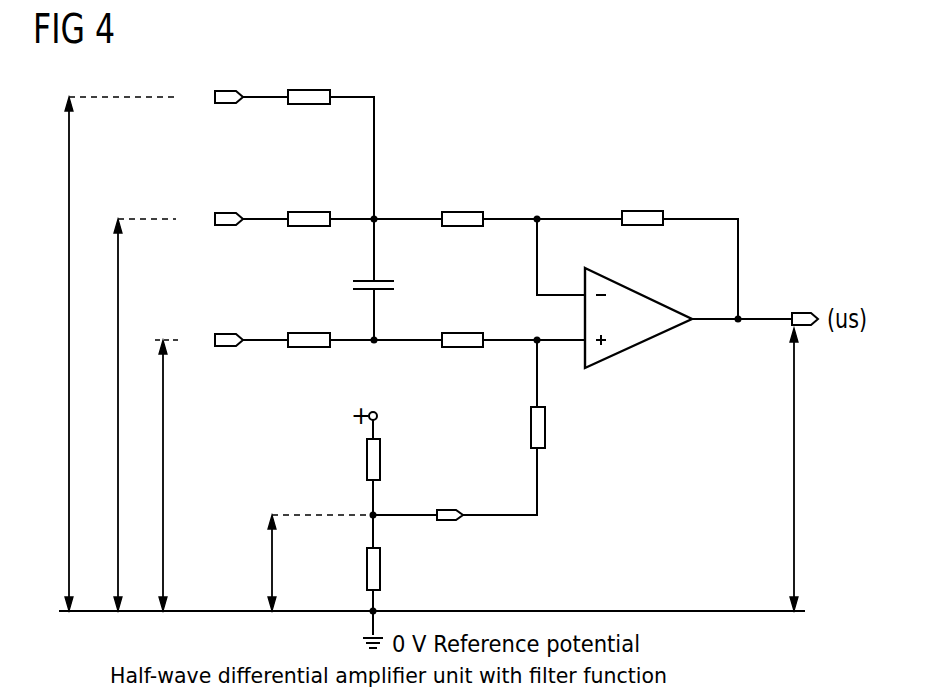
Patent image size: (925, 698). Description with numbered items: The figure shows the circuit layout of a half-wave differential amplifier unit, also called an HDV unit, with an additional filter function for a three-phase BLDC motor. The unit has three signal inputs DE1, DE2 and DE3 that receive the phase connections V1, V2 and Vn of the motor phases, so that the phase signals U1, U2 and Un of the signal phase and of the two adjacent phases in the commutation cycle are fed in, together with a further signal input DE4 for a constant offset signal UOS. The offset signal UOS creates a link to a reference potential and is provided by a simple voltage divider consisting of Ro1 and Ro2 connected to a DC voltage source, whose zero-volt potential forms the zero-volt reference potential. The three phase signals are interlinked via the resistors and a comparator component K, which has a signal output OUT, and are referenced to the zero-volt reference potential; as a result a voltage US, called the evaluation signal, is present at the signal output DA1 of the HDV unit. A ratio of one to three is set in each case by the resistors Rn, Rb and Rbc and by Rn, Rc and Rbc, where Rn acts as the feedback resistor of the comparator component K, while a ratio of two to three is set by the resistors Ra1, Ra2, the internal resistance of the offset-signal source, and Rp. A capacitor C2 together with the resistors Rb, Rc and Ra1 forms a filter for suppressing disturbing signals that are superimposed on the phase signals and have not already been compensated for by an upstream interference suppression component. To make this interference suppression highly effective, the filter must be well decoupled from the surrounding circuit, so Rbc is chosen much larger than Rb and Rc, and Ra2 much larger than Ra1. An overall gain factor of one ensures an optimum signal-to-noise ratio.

The signal input DE1 is at (222, 332).
The signal input DE2 is at (222, 211).
The signal input DE3 is at (222, 89).
The further signal input DE4 is at (450, 508).
The signal output DA1 is at (803, 311).
The resistor Rc is at (308, 88).
The resistor Rb is at (308, 210).
The resistor Rbc is at (462, 210).
The resistor Rn is at (643, 209).
The capacitor C2 is at (384, 280).
The resistor Ra1 is at (308, 332).
The resistor Ra2 is at (462, 332).
The resistor Rp is at (530, 427).
The voltage divider resistor Ro1 is at (366, 459).
The voltage divider resistor Ro2 is at (366, 572).
The comparator component K is at (636, 356).
The output OUT is at (640, 321).
The phase signal Un is at (106, 354).
The phase signal U2 is at (130, 415).
The phase signal U1 is at (157, 475).
The offset signal UOS is at (301, 563).
The voltage US is at (778, 469).
The phase connection Vn is at (195, 95).
The phase connection V2 is at (192, 220).
The phase connection V1 is at (197, 339).